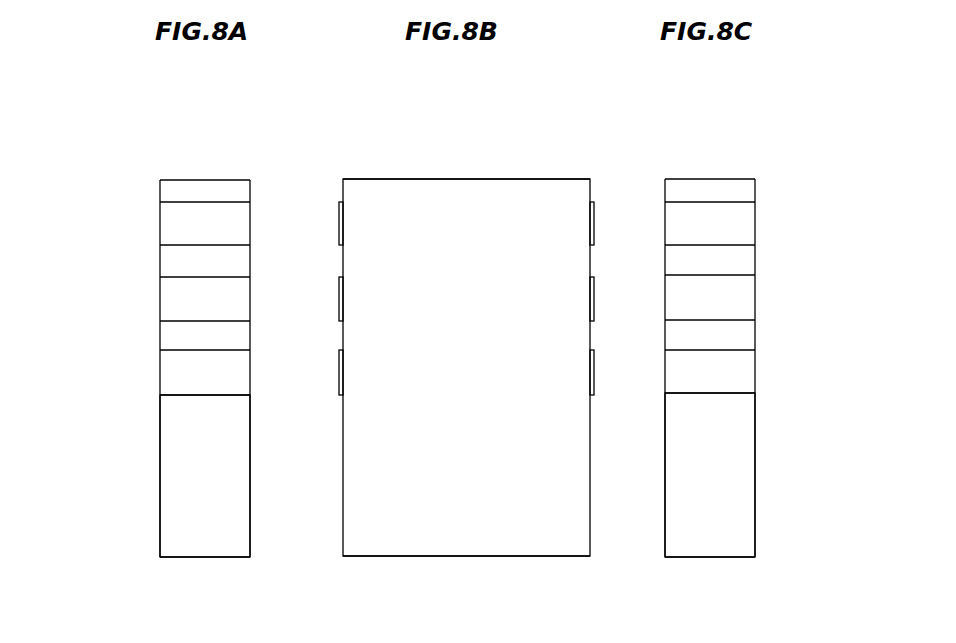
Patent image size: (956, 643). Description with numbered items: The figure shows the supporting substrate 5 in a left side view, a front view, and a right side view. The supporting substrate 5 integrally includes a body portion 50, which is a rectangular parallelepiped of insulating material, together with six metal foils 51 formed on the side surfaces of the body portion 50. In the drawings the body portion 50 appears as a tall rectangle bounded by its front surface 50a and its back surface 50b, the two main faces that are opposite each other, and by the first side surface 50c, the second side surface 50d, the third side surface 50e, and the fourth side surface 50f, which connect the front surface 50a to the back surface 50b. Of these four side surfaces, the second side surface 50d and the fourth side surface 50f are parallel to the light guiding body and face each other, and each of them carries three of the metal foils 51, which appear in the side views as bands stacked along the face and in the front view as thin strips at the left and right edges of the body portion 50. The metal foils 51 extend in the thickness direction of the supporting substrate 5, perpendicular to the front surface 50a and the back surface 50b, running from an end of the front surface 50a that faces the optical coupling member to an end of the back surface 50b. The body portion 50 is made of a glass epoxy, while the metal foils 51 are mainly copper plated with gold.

In FIG. 8A, the supporting substrate 5 is at (164, 153).
In FIG. 8B, the supporting substrate 5 is at (357, 152).
In FIG. 8C, the supporting substrate 5 is at (656, 150).
In FIG. 8A, the body portion 50 is at (228, 174).
In FIG. 8B, the body portion 50 is at (551, 171).
In FIG. 8C, the body portion 50 is at (752, 171).
In FIG. 8A, the front surface 50a is at (160, 452).
In FIG. 8B, the front surface 50a is at (426, 207).
In FIG. 8C, the front surface 50a is at (756, 450).
In FIG. 8A, the back surface 50b is at (250, 459).
In FIG. 8C, the back surface 50b is at (666, 455).
In FIG. 8A, the first side surface 50c is at (209, 558).
In FIG. 8B, the first side surface 50c is at (493, 558).
In FIG. 8C, the first side surface 50c is at (699, 558).
In FIG. 8C, the second side surface 50d is at (718, 494).
In FIG. 8A, the third side surface 50e is at (208, 180).
In FIG. 8B, the third side surface 50e is at (505, 178).
In FIG. 8C, the third side surface 50e is at (716, 179).
In FIG. 8A, the fourth side surface 50f is at (181, 508).
In FIG. 8A, the metal foils 51 is at (199, 375).
In FIG. 8B, the metal foils 51 is at (340, 367).
In FIG. 8C, the metal foils 51 is at (713, 375).